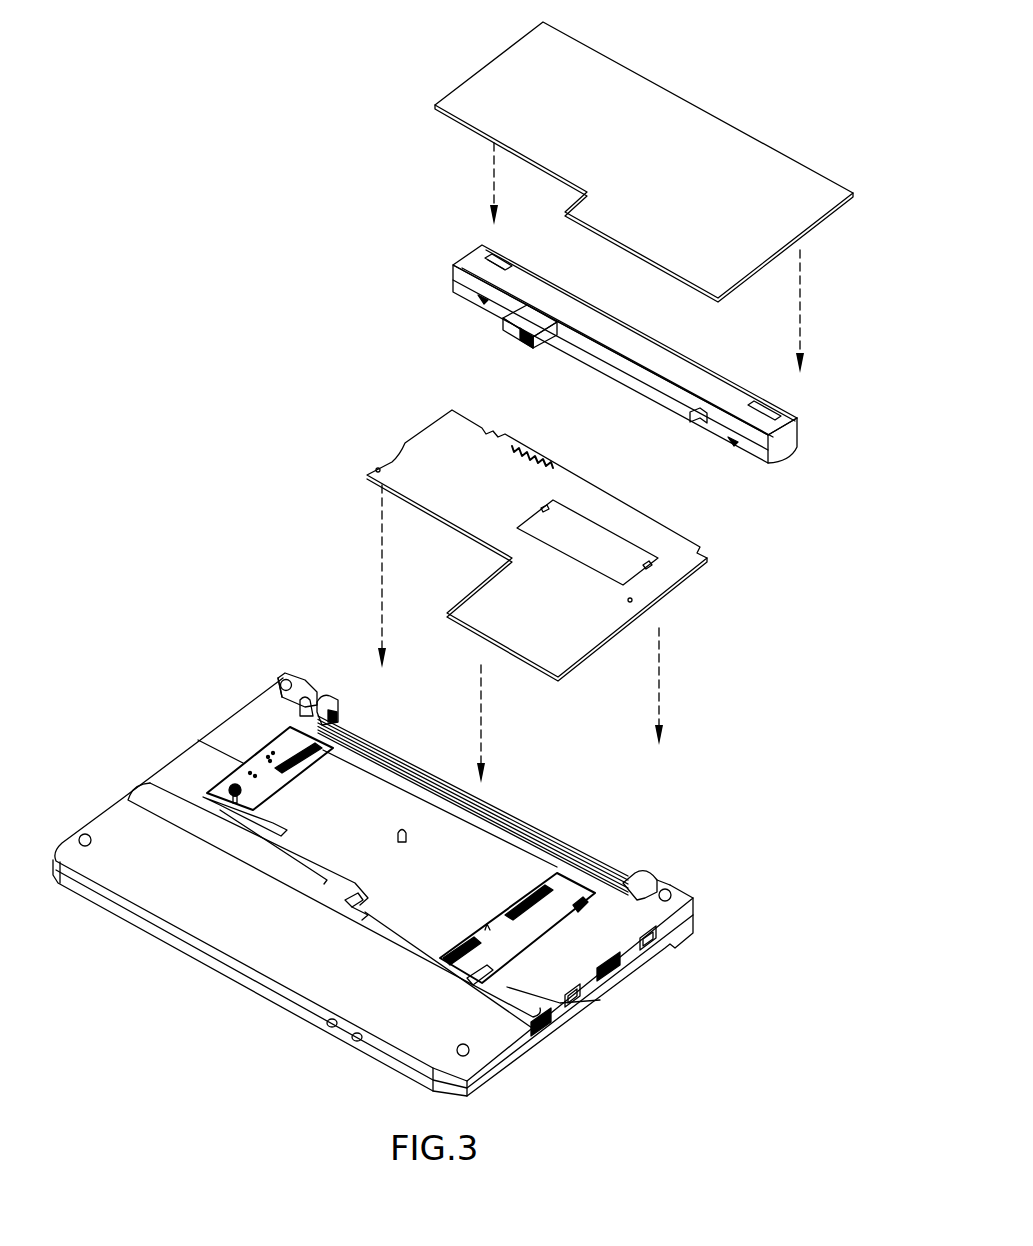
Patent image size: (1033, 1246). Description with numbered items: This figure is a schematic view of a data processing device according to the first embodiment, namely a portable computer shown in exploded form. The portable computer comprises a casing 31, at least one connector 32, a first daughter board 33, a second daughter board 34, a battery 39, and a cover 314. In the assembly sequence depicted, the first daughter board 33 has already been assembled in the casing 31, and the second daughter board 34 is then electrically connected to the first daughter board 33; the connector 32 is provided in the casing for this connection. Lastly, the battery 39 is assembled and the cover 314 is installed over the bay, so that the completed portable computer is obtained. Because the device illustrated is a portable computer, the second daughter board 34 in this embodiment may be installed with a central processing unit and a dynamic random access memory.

The cover 314 is at (615, 73).
The battery 39 is at (758, 405).
The second daughter board 34 is at (670, 547).
The casing 31 is at (522, 985).
The connector 32 is at (307, 743).
The first daughter board 33 is at (266, 797).